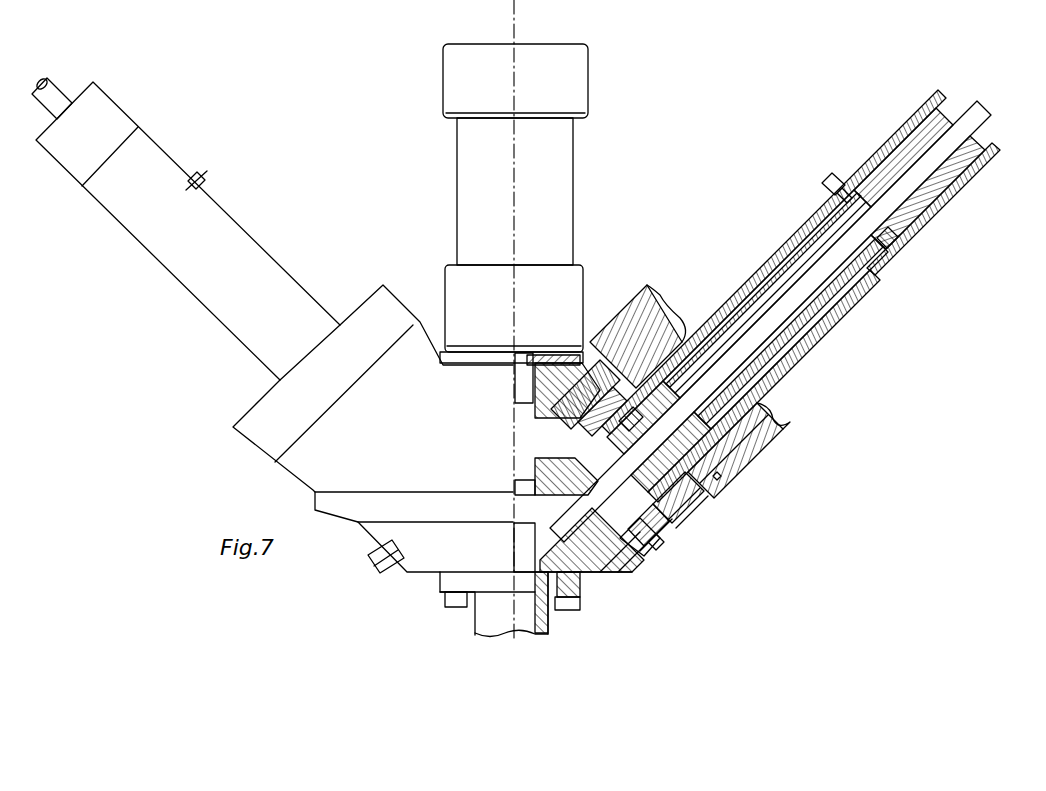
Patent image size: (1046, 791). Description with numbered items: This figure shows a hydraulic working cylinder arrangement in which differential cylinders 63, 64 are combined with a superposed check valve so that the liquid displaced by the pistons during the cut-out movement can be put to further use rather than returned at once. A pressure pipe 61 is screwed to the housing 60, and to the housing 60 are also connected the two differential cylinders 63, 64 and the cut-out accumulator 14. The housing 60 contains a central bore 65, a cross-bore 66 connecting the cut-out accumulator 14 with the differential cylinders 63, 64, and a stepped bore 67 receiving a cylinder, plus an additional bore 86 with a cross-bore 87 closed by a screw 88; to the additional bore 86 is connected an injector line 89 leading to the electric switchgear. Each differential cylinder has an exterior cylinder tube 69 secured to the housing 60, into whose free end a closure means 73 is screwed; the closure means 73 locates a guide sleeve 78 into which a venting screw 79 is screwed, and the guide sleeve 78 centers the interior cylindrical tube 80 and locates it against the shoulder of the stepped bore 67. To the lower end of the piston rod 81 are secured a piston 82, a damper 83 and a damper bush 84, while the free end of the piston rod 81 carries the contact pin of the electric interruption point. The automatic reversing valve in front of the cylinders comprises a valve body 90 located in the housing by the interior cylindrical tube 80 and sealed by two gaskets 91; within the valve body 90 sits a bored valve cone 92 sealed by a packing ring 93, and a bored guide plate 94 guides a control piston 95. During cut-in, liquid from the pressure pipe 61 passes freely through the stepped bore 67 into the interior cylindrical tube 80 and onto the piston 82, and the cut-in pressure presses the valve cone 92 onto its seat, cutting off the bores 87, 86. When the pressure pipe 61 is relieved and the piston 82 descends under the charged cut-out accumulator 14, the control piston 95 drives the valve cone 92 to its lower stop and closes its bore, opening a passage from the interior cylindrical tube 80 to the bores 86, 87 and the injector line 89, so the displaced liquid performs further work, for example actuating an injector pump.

The cut-out accumulator 14 is at (484, 203).
The housing 60 is at (451, 436).
The pressure pipe 61 is at (550, 630).
The differential cylinder 63 is at (727, 297).
The differential cylinder 64 is at (227, 215).
The central bore 65 is at (518, 413).
The cross-bore 66 is at (512, 485).
The stepped bore 67 is at (527, 535).
The exterior cylinder tube 69 is at (875, 272).
The closure means 73 is at (958, 186).
The guide sleeve 78 is at (890, 240).
The venting screw 79 is at (832, 188).
The interior cylindrical tube 80 is at (805, 342).
The piston rod 81 is at (733, 358).
The piston 82 is at (730, 440).
The damper 83 is at (717, 478).
The damper bush 84 is at (752, 415).
The additional bore 86 is at (653, 552).
The cross-bore 87 is at (618, 572).
The screw 88 is at (645, 570).
The injector line 89 is at (604, 440).
The valve body 90 is at (688, 536).
The gaskets 91 is at (687, 527).
The bored valve cone 92 is at (653, 533).
The packing ring 93 is at (657, 545).
The bored guide plate 94 is at (673, 515).
The control piston 95 is at (700, 495).